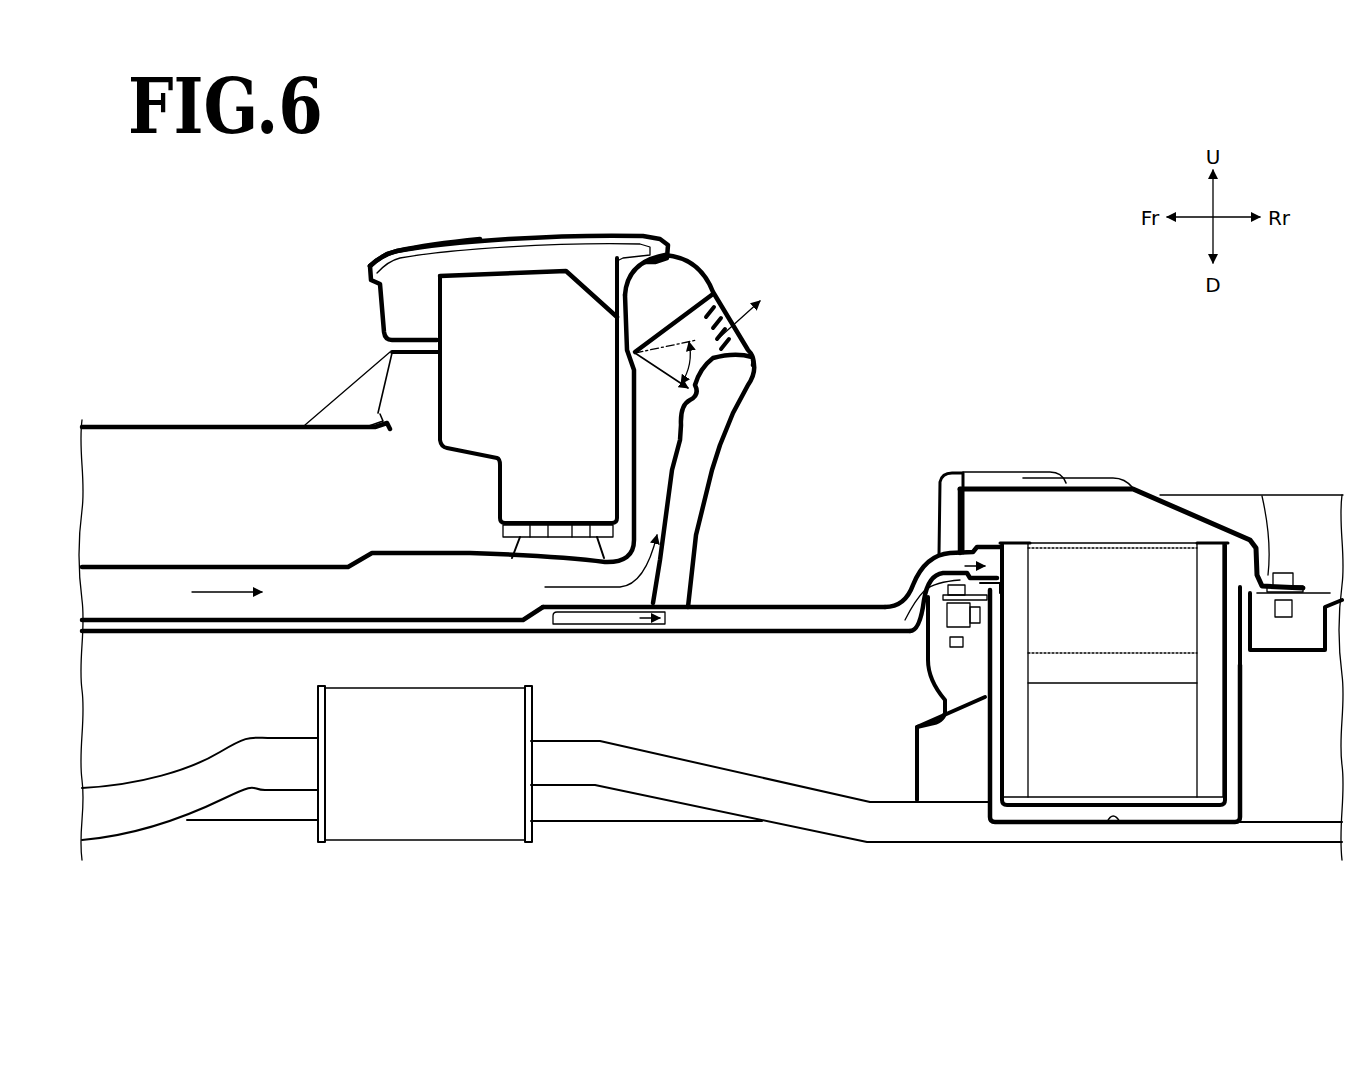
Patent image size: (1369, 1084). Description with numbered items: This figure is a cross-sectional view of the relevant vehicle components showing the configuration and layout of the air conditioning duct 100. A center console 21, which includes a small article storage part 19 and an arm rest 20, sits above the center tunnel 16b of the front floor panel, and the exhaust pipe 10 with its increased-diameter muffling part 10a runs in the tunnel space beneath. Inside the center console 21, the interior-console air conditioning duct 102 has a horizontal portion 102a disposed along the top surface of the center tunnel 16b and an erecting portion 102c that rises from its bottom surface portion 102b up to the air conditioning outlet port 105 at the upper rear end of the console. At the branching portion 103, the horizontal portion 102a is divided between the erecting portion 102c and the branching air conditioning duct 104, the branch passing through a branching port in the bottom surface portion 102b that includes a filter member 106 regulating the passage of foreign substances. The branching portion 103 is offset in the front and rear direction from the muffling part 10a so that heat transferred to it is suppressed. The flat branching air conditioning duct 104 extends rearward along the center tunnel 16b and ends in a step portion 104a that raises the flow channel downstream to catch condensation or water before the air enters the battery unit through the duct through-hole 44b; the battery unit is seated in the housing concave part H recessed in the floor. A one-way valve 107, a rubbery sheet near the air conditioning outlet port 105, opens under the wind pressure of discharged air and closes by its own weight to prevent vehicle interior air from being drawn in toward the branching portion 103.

The exhaust pipe 10 is at (897, 823).
The muffling part 10a is at (422, 818).
The center tunnel 16b is at (770, 633).
The small article storage part 19 is at (443, 407).
The arm rest 20 is at (572, 240).
The center console 21 is at (414, 246).
The duct through-hole 44b is at (950, 478).
The air conditioning duct 100 is at (343, 560).
The interior-console air conditioning duct 102 is at (232, 565).
The horizontal portion 102a is at (104, 573).
The bottom surface portion 102b is at (637, 603).
The erecting portion 102c is at (690, 470).
The branching portion 103 is at (582, 613).
The branching air conditioning duct 104 is at (836, 607).
The step portion 104a is at (895, 598).
The air conditioning outlet port 105 is at (735, 330).
The filter member 106 is at (610, 613).
The one-way valve 107 is at (660, 377).
The housing concave part H is at (1115, 825).